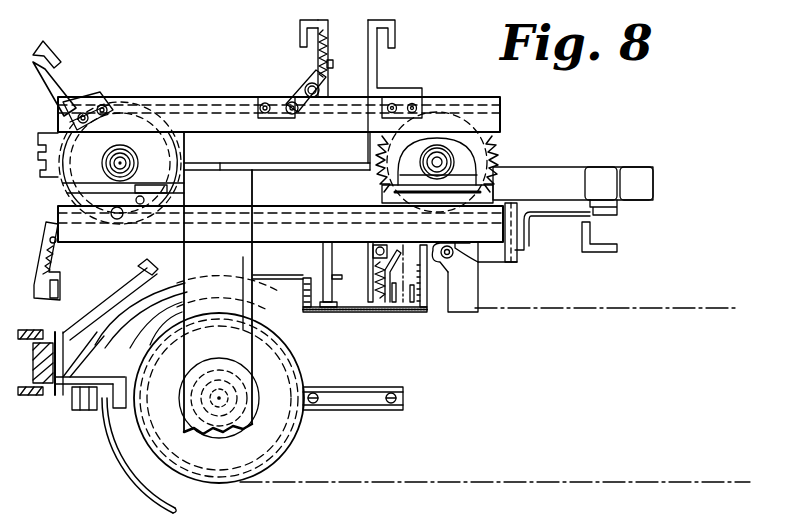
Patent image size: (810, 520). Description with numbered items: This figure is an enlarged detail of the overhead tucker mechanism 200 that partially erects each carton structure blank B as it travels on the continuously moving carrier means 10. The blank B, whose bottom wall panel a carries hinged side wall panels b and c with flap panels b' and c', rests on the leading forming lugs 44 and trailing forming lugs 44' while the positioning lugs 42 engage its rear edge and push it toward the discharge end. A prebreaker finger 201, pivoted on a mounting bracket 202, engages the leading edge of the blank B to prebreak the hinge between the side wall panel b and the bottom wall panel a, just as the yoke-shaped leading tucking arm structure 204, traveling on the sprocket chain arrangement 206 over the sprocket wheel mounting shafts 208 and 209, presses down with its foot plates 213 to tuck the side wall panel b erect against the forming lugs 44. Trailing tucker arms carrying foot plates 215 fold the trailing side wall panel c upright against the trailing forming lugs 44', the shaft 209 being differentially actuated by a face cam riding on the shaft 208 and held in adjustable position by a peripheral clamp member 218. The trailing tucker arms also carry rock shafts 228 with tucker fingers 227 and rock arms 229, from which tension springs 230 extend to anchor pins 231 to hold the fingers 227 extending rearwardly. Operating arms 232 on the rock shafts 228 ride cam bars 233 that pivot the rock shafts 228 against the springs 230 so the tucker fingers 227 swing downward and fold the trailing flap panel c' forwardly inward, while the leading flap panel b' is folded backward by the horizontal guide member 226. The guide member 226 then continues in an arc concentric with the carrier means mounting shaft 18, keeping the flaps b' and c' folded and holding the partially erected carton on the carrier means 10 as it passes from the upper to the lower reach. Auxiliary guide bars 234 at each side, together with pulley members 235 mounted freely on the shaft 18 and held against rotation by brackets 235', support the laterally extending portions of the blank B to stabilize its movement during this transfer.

The carrier means 10 is at (650, 306).
The carrier means mounting shaft 18 is at (240, 412).
The positioning lugs 42 is at (475, 296).
The forming lugs 44 is at (357, 324).
The trailing forming lugs 44' is at (454, 288).
The overhead tucker mechanism 200 is at (202, 97).
The prebreaker finger 201 is at (447, 232).
The mounting bracket 202 is at (510, 264).
The leading tucking arm structure 204 is at (385, 68).
The sprocket chain arrangement 206 is at (333, 63).
The sprocket wheel mounting shaft 208 is at (117, 140).
The sprocket wheel mounting shaft 209 is at (440, 155).
The foot plates 213 is at (397, 33).
The foot plates 215 is at (300, 28).
The peripheral clamp member 218 is at (57, 140).
The guide member 226 is at (140, 268).
The tucker fingers 227 is at (278, 85).
The rock shafts 228 is at (322, 88).
The rock arms 229 is at (303, 80).
The tension springs 230 is at (327, 39).
The anchor pins 231 is at (323, 26).
The operating arms 232 is at (312, 113).
The cam bars 233 is at (343, 278).
The auxiliary guide bars 234 is at (328, 307).
The pulley members 235 is at (352, 380).
The brackets 235' is at (355, 423).
The bottom wall panel a is at (365, 312).
The carton structure blank B is at (369, 320).
The side wall panel b is at (292, 279).
The flap panel b' is at (319, 274).
The side wall panel c is at (450, 291).
The flap panel c' is at (419, 253).